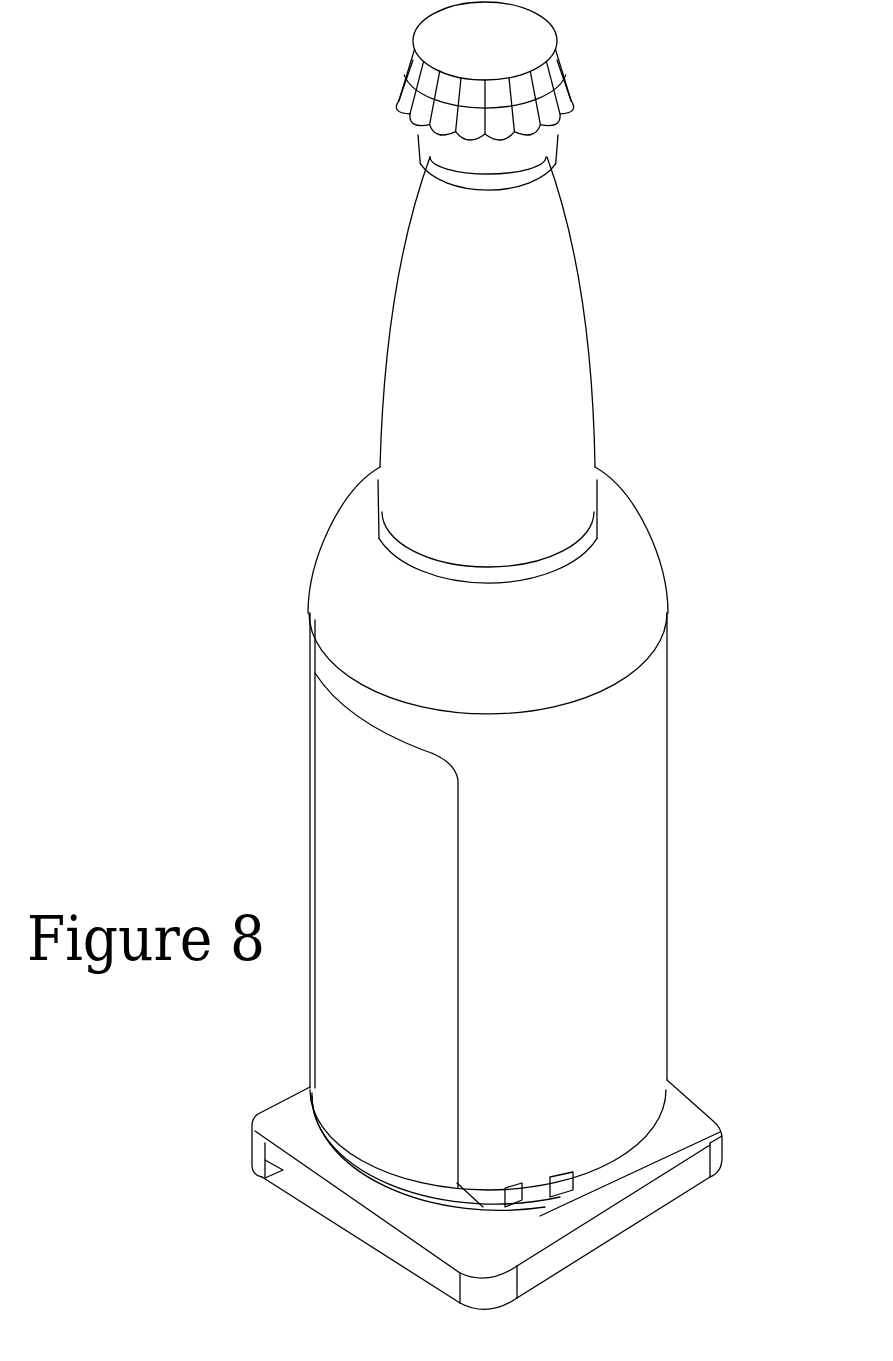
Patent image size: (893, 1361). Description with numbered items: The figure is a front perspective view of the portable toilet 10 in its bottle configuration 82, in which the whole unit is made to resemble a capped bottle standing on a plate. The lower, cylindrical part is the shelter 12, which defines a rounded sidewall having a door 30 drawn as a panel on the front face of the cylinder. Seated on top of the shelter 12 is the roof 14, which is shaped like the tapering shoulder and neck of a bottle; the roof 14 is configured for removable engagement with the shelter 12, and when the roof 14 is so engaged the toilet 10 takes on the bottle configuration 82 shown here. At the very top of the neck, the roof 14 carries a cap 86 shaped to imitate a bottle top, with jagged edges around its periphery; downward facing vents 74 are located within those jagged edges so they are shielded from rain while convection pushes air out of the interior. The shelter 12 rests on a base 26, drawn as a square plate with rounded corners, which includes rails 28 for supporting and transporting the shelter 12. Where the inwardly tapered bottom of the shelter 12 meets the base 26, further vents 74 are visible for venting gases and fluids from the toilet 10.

The portable toilet 10 is at (98, 152).
The shelter 12 is at (647, 858).
The roof 14 is at (630, 568).
The base 26 is at (363, 1198).
The rails 28 is at (468, 1288).
The door 30 is at (386, 930).
The vents 74 is at (520, 1202).
The bottle configuration 82 is at (320, 418).
The cap 86 is at (484, 71).